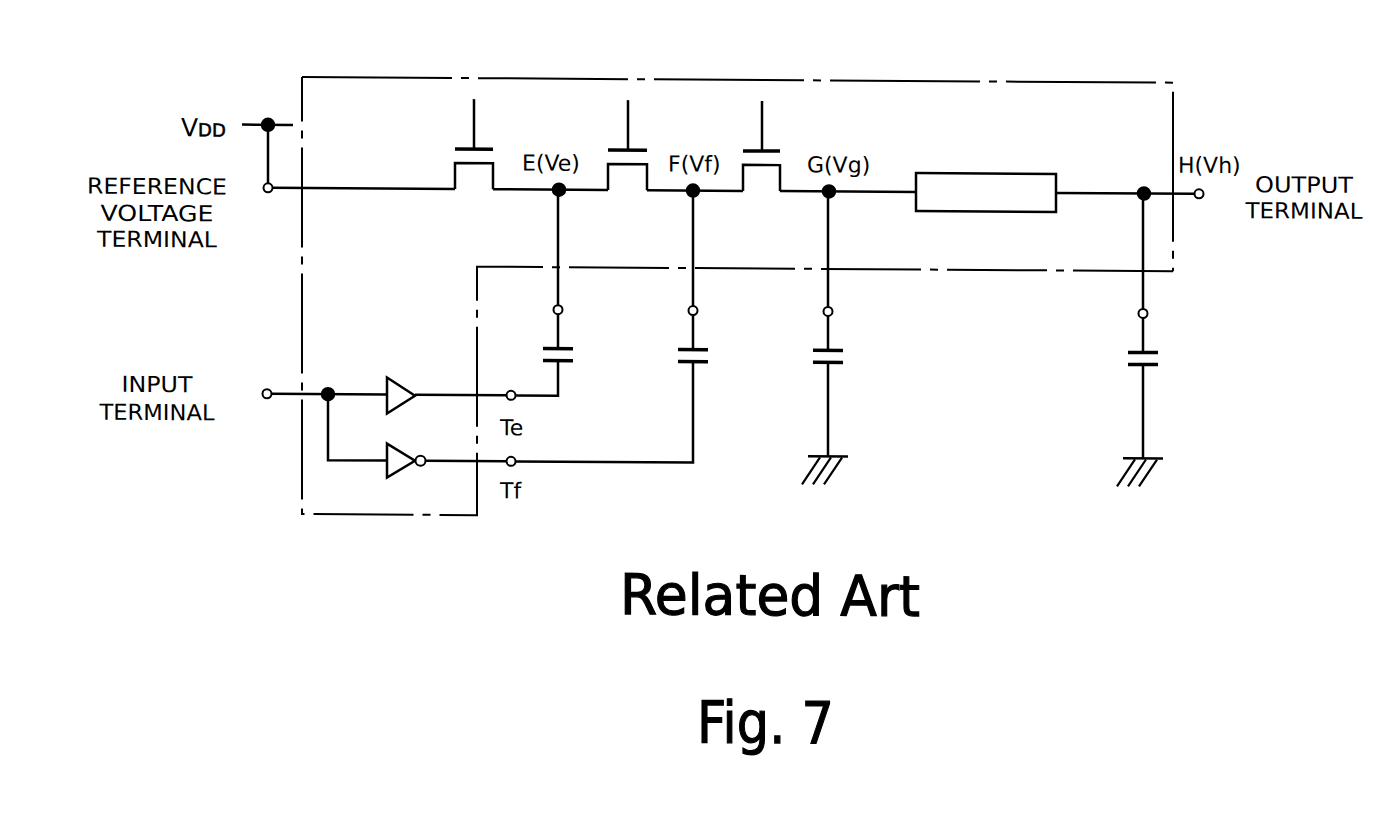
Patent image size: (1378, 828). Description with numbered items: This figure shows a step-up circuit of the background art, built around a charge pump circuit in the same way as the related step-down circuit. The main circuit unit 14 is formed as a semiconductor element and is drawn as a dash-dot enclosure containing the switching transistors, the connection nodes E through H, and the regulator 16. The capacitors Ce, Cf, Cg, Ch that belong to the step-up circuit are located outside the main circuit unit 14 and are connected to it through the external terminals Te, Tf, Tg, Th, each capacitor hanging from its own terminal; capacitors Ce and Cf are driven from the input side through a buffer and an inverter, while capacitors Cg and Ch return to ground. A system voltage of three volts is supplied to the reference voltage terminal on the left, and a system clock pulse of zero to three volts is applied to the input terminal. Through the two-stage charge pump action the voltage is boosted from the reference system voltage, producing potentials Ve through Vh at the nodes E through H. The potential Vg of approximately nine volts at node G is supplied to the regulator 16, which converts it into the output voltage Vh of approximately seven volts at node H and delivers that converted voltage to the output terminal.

The main circuit unit 14 is at (860, 80).
The regulator 16 is at (1003, 178).
The capacitor Ce is at (577, 358).
The capacitor Cf is at (712, 358).
The capacitor Cg is at (848, 359).
The capacitor Ch is at (1163, 361).
The external terminal Te is at (577, 310).
The external terminal Tf is at (712, 311).
The external terminal Tg is at (849, 311).
The external terminal Th is at (1164, 313).